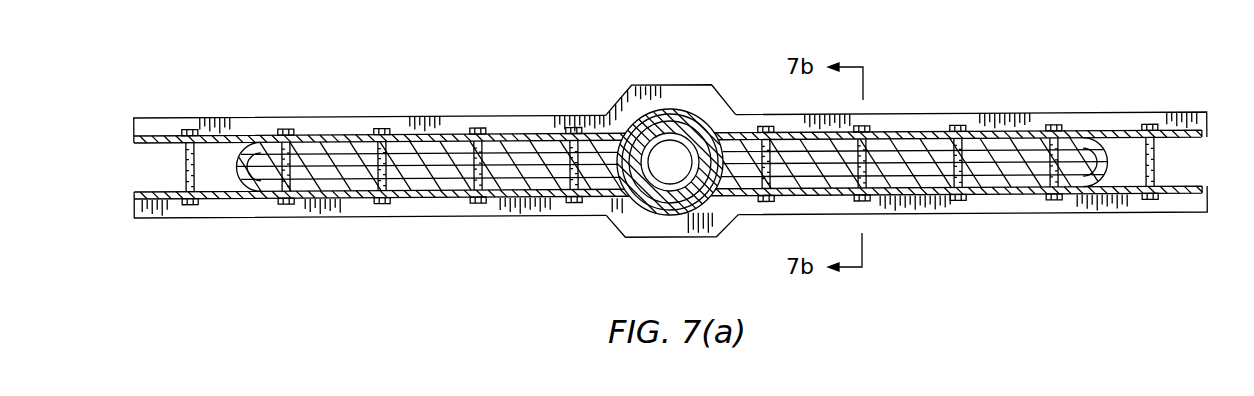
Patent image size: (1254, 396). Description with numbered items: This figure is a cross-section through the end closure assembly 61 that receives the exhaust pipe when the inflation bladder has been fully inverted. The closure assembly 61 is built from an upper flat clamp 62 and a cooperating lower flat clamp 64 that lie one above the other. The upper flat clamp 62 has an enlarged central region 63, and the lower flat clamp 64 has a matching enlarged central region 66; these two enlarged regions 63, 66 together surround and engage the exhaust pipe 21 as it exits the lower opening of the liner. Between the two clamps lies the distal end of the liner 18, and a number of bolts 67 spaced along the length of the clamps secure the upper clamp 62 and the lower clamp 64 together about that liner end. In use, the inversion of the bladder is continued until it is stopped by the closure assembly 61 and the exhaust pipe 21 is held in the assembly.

The end closure assembly 61 is at (692, 155).
The upper flat clamp 62 is at (917, 135).
The enlarged central region 63 is at (630, 103).
The lower flat clamp 64 is at (880, 205).
The enlarged central region 66 is at (635, 224).
The bolts 67 is at (1157, 170).
The exhaust pipe 21 is at (618, 200).
The liner 18 is at (1091, 198).